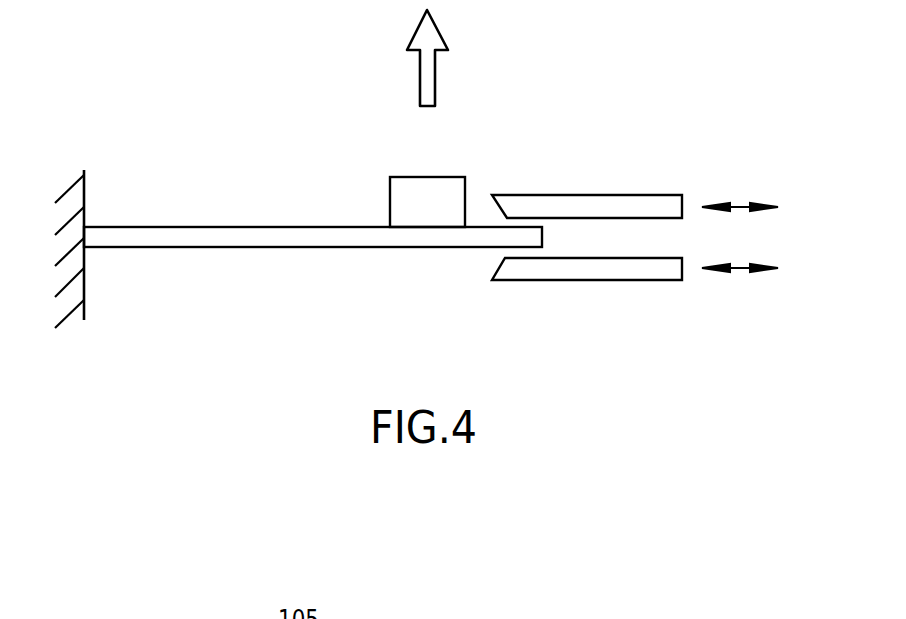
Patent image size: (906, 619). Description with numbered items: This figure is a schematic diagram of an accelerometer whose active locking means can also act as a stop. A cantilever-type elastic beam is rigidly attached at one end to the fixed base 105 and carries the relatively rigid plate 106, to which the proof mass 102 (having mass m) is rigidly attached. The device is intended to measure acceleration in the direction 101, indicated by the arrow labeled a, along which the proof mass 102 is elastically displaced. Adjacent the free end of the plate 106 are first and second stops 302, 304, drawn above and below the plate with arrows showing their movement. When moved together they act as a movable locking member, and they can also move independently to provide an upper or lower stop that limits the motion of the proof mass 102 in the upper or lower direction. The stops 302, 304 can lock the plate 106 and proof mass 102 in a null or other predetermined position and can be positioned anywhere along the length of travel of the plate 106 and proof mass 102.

The direction of acceleration 101 is at (446, 43).
The proof mass 102 is at (389, 203).
The base 105 is at (86, 197).
The base plate 106 is at (390, 249).
The first stop 302 is at (582, 194).
The second stop 304 is at (605, 282).